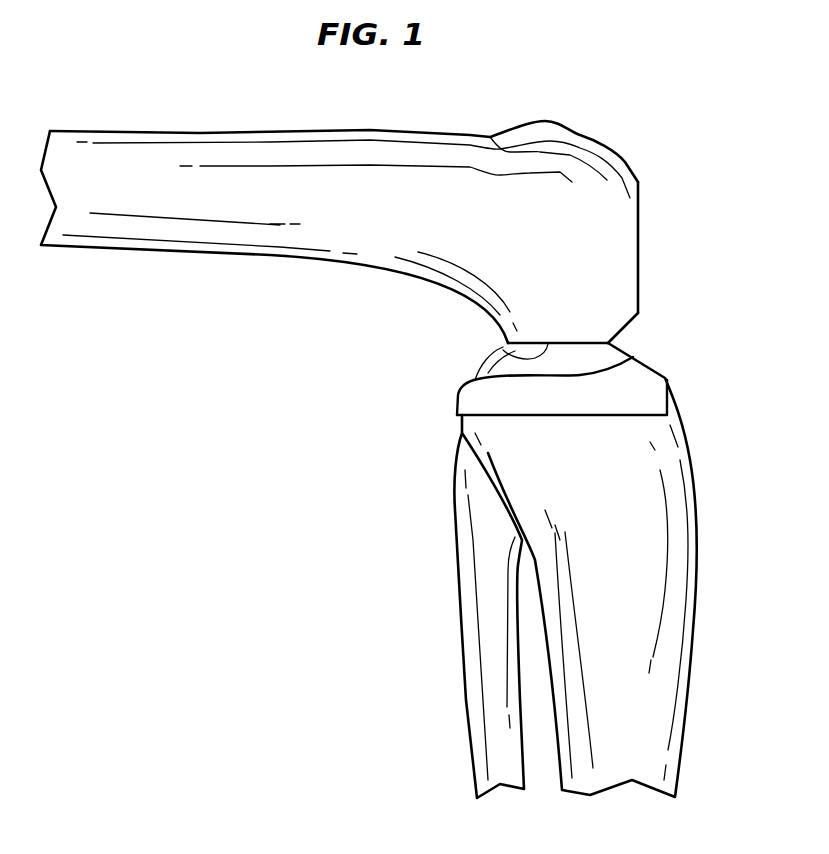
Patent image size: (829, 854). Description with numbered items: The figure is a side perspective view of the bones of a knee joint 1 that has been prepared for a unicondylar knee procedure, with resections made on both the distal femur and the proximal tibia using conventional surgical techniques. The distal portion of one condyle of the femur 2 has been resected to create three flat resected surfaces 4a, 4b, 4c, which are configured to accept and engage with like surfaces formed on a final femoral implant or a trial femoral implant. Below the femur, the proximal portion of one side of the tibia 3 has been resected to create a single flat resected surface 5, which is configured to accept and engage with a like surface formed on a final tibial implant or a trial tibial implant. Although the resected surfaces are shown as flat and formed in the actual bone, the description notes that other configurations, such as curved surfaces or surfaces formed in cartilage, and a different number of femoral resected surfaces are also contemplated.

The knee joint 1 is at (712, 244).
The femur 2 is at (305, 175).
The tibia 3 is at (628, 578).
The resected surface 4a is at (639, 236).
The resected surface 4b is at (629, 327).
The resected surface 4c is at (503, 350).
The resected surface 5 is at (510, 415).